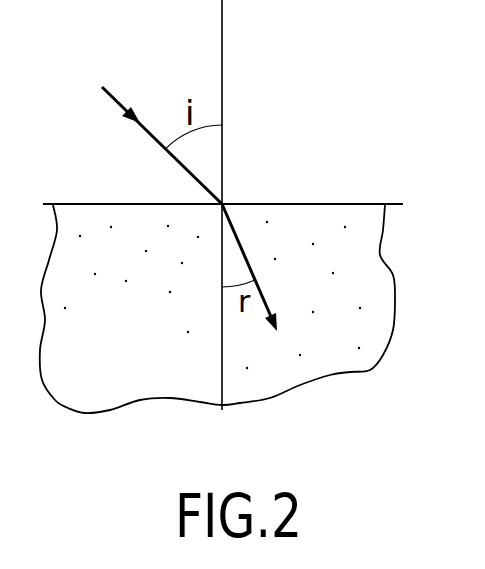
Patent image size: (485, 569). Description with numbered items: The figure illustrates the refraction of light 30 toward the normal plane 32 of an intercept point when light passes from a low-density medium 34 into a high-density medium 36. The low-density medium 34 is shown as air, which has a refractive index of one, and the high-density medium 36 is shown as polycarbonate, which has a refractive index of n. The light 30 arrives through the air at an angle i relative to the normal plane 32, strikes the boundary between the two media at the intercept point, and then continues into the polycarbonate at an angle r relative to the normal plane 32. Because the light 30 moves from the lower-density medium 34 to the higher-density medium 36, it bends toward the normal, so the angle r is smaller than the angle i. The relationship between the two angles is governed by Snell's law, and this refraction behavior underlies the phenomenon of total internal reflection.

The light 30 is at (105, 90).
The normal plane 32 is at (222, 22).
The low-density medium 34 is at (340, 145).
The high-density medium 36 is at (145, 351).